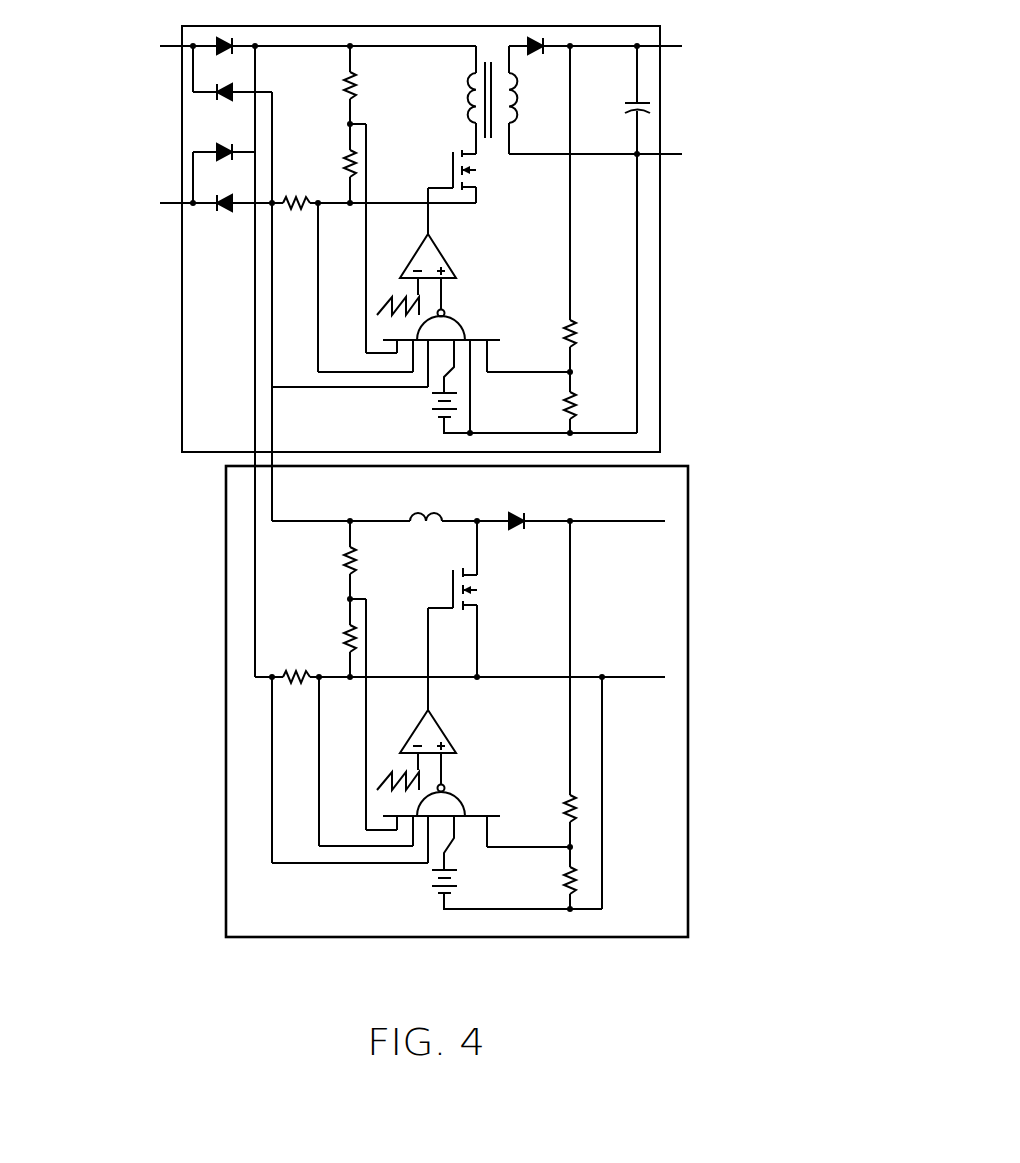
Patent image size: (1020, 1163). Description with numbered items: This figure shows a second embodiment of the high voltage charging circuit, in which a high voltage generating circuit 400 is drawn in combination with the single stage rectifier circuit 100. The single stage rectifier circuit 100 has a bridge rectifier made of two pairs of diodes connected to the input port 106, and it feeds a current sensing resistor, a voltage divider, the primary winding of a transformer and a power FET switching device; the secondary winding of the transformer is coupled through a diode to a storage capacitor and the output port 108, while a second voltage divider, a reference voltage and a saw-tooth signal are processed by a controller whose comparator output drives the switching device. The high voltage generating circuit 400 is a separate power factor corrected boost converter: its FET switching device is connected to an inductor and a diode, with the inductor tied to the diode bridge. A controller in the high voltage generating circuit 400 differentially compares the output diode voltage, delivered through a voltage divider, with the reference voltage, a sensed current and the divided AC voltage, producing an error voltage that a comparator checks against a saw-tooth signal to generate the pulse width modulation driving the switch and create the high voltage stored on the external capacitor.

The Input Port 106 is at (117, 119).
The Output Port 108 is at (743, 95).
The single stage rectifier circuit 100 is at (686, 254).
The high voltage generating circuit 400 is at (716, 634).